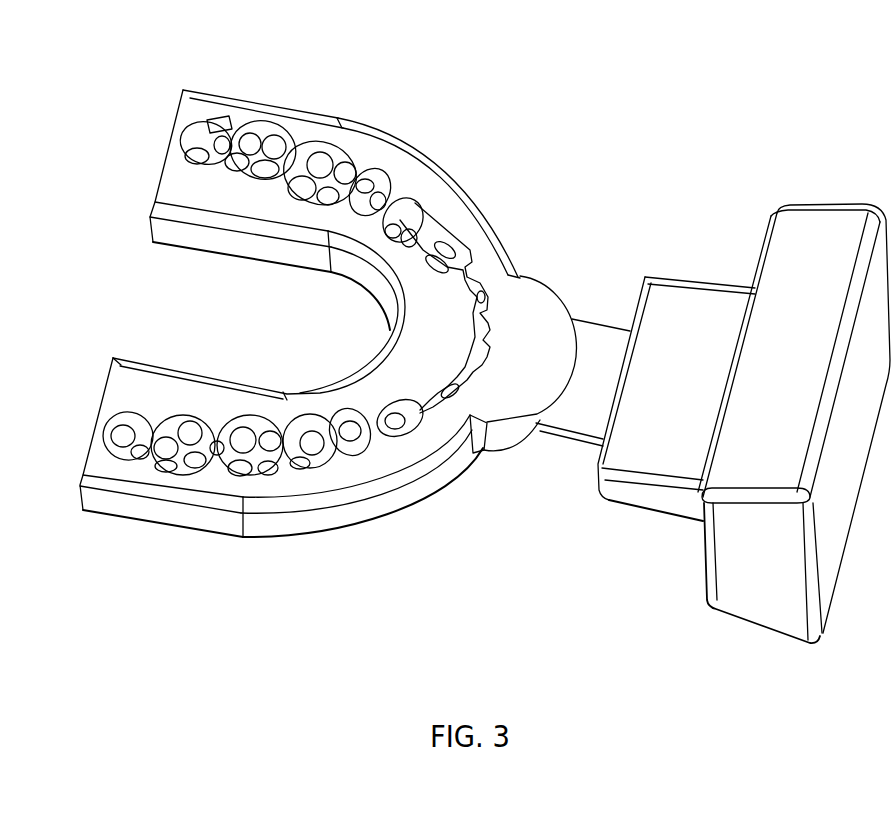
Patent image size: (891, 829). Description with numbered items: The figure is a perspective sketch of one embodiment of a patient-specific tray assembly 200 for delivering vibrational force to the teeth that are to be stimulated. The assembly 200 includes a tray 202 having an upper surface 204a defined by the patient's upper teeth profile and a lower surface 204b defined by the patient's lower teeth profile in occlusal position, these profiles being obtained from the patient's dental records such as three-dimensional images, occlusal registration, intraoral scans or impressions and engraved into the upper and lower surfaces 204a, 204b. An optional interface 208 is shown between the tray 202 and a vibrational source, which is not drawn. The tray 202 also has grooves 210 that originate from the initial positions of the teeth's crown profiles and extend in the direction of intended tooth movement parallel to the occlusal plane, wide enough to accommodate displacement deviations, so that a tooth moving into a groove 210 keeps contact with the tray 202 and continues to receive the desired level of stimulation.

The patient-specific tray assembly 200 is at (557, 104).
The tray 202 is at (229, 376).
The upper surface 204a is at (381, 180).
The lower surface 204b is at (398, 531).
The interface 208 is at (668, 308).
The grooves 210 is at (438, 224).